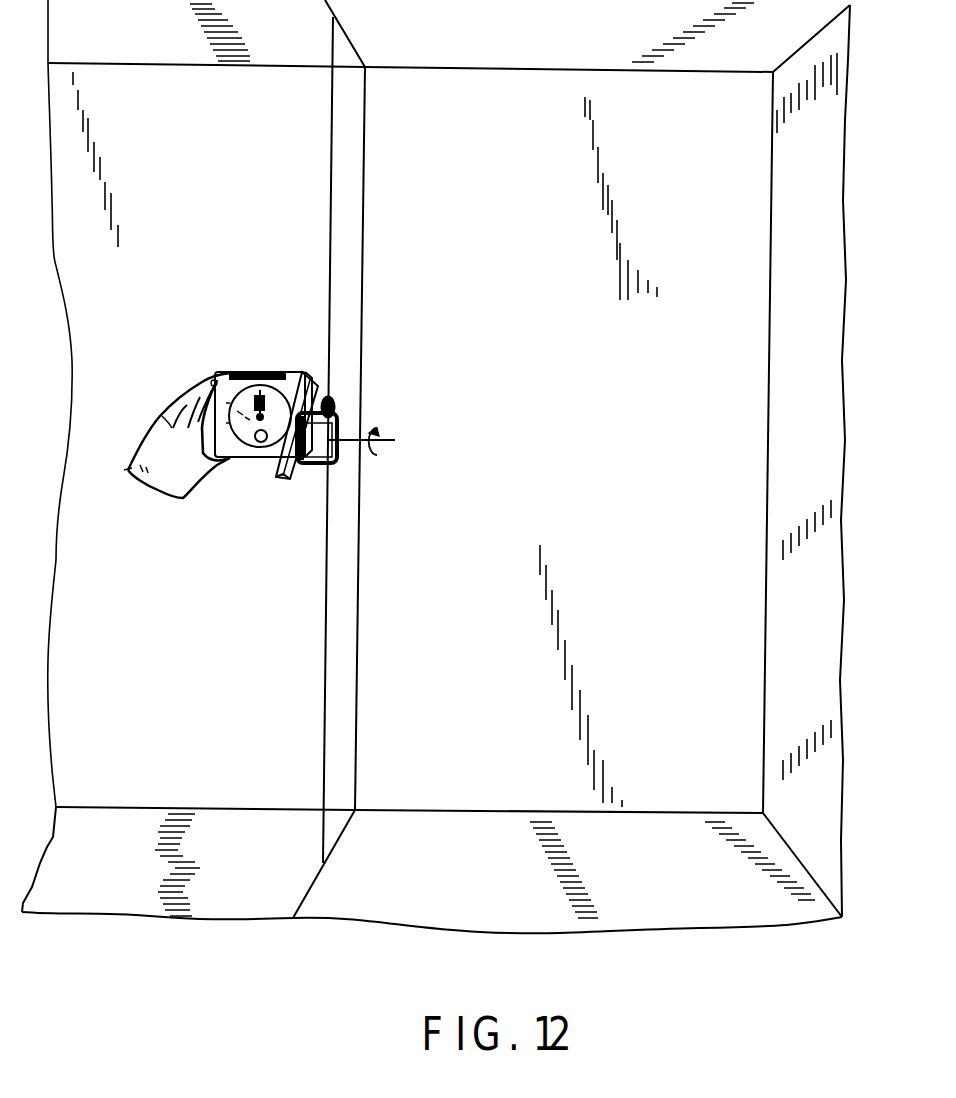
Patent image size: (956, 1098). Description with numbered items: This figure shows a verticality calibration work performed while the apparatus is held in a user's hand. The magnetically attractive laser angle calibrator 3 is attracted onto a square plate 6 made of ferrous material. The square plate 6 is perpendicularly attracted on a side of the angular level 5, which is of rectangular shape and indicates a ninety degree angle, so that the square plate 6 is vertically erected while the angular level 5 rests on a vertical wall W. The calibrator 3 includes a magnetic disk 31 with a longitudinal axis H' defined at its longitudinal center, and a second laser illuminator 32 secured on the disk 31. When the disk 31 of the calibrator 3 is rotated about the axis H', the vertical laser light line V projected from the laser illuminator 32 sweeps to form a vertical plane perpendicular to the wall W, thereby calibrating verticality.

The angular level 5 is at (245, 370).
The square plate 6 is at (279, 474).
The magnetic disk 31 is at (288, 480).
The second laser illuminator 32 is at (330, 399).
The magnetically attractive laser angle calibrator 3 is at (345, 420).
The laser light line V is at (332, 263).
The longitudinal axis H is at (395, 440).
The vertical wall W is at (722, 430).